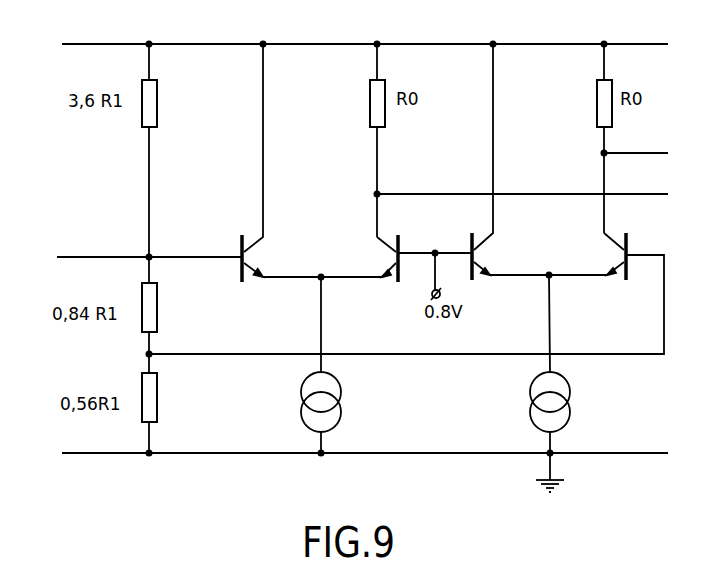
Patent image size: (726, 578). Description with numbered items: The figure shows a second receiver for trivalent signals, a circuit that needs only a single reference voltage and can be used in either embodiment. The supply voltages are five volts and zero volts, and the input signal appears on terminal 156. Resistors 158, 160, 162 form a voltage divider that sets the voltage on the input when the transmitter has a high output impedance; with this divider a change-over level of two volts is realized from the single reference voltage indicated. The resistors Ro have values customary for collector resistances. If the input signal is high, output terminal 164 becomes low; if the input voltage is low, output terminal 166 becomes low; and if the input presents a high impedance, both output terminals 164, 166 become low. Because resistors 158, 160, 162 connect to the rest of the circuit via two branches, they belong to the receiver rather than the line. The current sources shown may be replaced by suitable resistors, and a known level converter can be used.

The terminal 156 is at (69, 254).
The resistor 158 is at (158, 105).
The resistor 160 is at (158, 316).
The resistor 162 is at (158, 405).
The output terminal 164 is at (659, 155).
The output terminal 166 is at (659, 196).